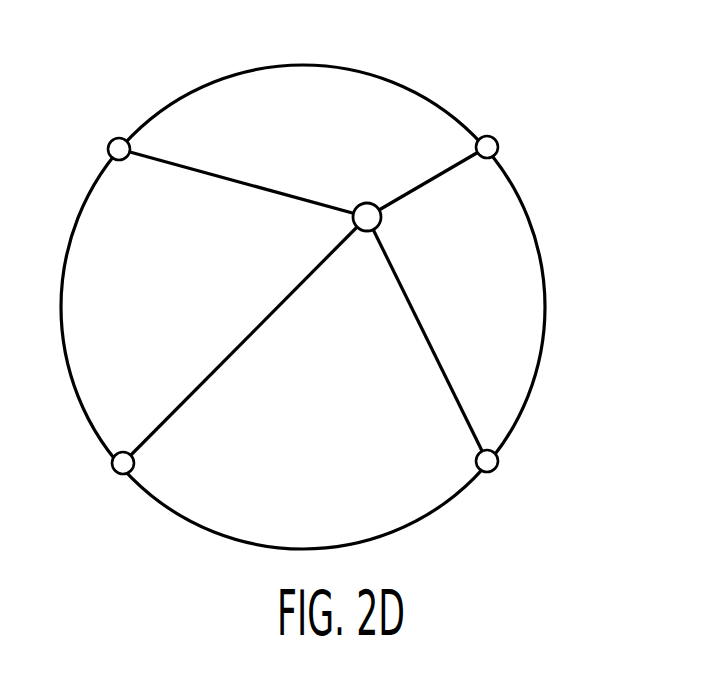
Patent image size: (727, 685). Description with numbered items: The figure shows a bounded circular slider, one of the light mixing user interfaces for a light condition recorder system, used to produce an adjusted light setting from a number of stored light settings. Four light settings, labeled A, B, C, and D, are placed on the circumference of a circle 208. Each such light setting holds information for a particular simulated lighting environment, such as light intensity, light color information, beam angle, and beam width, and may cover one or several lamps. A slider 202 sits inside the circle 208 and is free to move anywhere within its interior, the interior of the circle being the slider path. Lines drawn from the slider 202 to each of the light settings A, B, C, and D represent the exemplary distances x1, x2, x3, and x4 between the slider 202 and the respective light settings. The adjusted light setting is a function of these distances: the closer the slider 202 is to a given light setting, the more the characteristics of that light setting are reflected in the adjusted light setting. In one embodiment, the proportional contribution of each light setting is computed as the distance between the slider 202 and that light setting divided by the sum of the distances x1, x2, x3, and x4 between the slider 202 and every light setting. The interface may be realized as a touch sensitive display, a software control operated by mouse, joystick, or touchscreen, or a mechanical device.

The slider 202 is at (365, 203).
The circle 208 is at (552, 231).
The light setting A is at (113, 131).
The light setting B is at (494, 131).
The light setting C is at (496, 476).
The light setting D is at (114, 479).
The distance x1 is at (427, 181).
The distance x2 is at (427, 339).
The distance x3 is at (245, 340).
The distance x4 is at (243, 183).